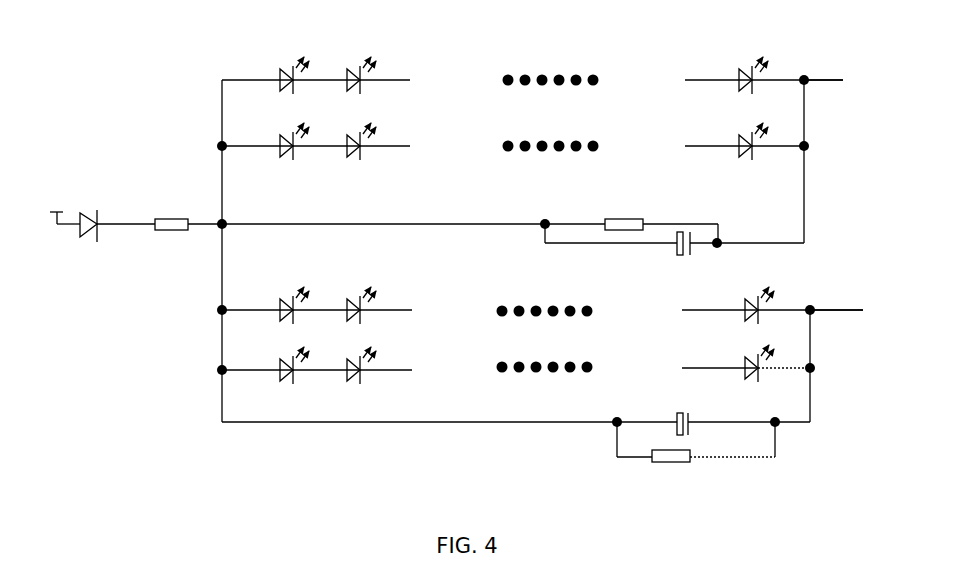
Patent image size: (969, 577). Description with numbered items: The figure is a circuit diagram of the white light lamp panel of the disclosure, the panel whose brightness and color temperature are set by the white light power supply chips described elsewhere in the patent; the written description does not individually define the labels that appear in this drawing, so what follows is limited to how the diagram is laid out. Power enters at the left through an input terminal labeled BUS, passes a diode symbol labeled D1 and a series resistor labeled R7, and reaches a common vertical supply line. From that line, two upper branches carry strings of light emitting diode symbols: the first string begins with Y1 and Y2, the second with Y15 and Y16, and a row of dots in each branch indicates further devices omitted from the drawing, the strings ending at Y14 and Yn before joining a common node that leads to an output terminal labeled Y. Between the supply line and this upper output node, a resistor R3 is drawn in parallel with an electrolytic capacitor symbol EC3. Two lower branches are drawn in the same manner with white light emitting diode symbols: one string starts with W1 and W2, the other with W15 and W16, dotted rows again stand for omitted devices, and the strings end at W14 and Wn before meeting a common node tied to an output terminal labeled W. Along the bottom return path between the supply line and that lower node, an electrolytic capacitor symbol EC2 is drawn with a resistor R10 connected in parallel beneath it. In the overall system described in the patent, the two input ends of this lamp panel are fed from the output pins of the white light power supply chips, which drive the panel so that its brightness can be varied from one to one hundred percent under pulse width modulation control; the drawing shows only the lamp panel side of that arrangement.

The bus input terminal BUS is at (57, 204).
The diode D1 is at (91, 242).
The resistor R7 is at (171, 243).
The yellow LED Y1 is at (292, 57).
The yellow LED Y2 is at (359, 57).
The yellow LED Y14 is at (744, 57).
The yellow LED Y15 is at (296, 157).
The yellow LED Y16 is at (361, 157).
The yellow LED Yn is at (752, 157).
The yellow output terminal Y is at (823, 62).
The resistor R3 is at (624, 212).
The electrolytic capacitor EC3 is at (684, 257).
The white LED W1 is at (292, 289).
The white LED W2 is at (358, 289).
The white LED W14 is at (784, 295).
The white LED W15 is at (292, 381).
The white LED W16 is at (357, 381).
The white LED Wn is at (773, 372).
The white output terminal W is at (836, 298).
The electrolytic capacitor EC2 is at (680, 409).
The resistor R10 is at (671, 470).